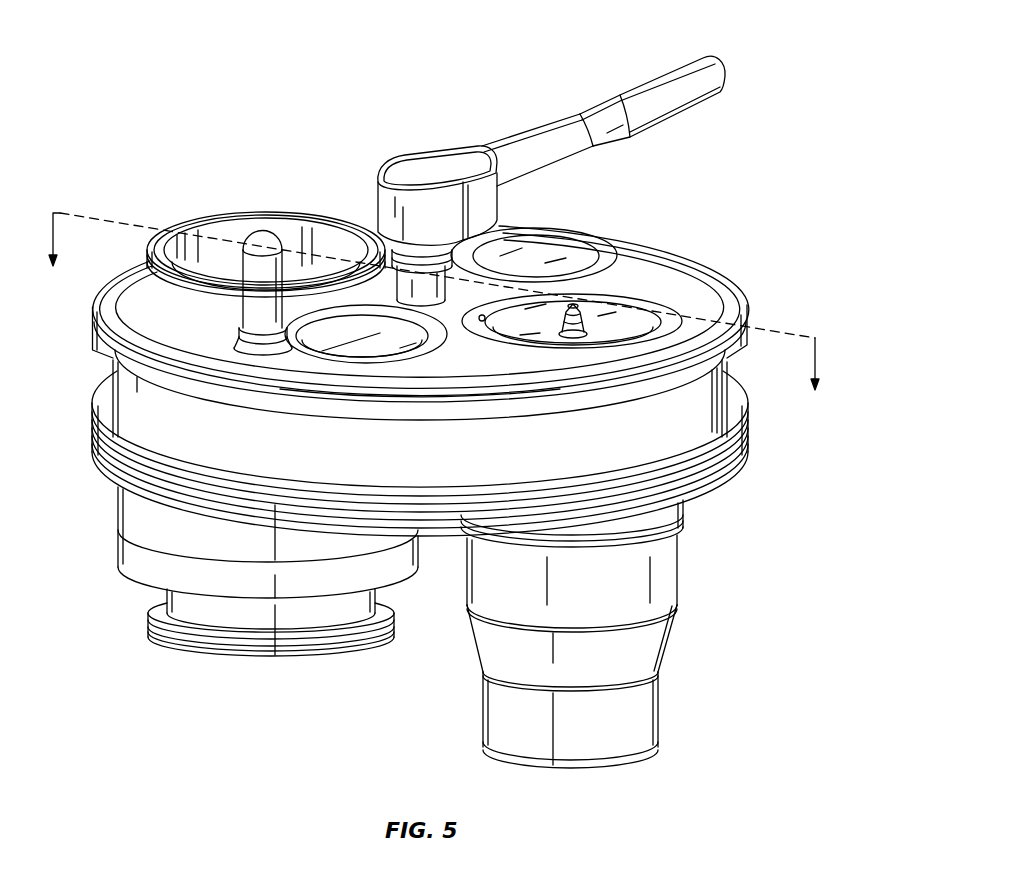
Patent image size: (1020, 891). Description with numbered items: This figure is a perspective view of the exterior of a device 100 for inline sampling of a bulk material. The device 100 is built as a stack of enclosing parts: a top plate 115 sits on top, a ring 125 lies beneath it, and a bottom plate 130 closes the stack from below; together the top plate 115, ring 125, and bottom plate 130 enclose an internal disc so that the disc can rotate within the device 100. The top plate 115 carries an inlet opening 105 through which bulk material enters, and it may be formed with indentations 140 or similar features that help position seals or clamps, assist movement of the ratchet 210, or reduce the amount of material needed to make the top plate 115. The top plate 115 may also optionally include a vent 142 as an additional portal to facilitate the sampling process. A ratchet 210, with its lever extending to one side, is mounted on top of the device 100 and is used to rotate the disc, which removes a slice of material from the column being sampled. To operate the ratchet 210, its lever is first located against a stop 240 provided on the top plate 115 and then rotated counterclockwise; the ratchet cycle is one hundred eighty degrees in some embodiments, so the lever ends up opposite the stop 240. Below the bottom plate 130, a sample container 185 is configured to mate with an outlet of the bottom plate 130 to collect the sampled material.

The device 100 is at (186, 60).
The inlet opening 105 is at (232, 230).
The top plate 115 is at (693, 290).
The ring 125 is at (732, 385).
The bottom plate 130 is at (742, 458).
The indentations 140 is at (620, 318).
The vent 142 is at (573, 302).
The sample container 185 is at (668, 590).
The ratchet 210 is at (413, 162).
The stop 240 is at (240, 296).